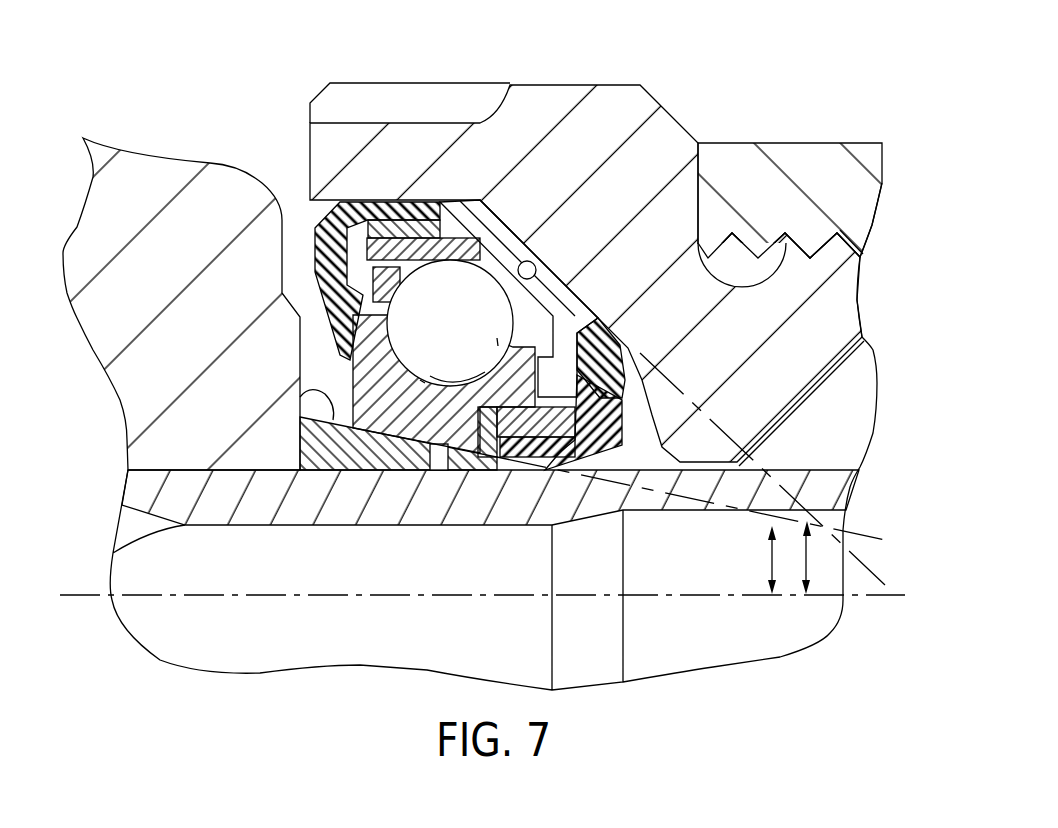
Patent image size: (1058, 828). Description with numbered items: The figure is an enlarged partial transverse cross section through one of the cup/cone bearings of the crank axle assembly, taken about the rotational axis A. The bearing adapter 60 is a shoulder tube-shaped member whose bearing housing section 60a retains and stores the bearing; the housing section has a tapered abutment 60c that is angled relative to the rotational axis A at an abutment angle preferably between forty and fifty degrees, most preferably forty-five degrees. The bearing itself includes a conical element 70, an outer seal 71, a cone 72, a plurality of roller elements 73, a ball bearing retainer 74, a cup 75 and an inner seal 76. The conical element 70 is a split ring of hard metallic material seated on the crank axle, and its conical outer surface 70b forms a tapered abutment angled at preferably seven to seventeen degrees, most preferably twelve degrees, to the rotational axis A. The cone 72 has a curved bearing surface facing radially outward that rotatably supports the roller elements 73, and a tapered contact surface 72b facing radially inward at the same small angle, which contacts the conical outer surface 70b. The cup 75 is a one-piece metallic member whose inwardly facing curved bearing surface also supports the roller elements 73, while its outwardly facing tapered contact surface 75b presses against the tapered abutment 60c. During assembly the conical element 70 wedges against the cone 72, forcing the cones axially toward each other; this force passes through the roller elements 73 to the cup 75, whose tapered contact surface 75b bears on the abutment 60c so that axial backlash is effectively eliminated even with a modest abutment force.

The bearing adapter 60 is at (387, 82).
The bearing housing section 60a is at (603, 125).
The tapered abutment 60c is at (545, 281).
The conical element 70 is at (372, 453).
The conical outer surface 70b is at (300, 398).
The outer seal 71 is at (317, 253).
The cone 72 is at (353, 380).
The tapered contact surface 72b is at (440, 470).
The roller elements 73 is at (459, 334).
The ball bearing retainer 74 is at (487, 408).
The cup 75 is at (495, 238).
The tapered contact surface 75b is at (560, 276).
The inner seal 76 is at (610, 428).
The rotational axis A is at (92, 596).